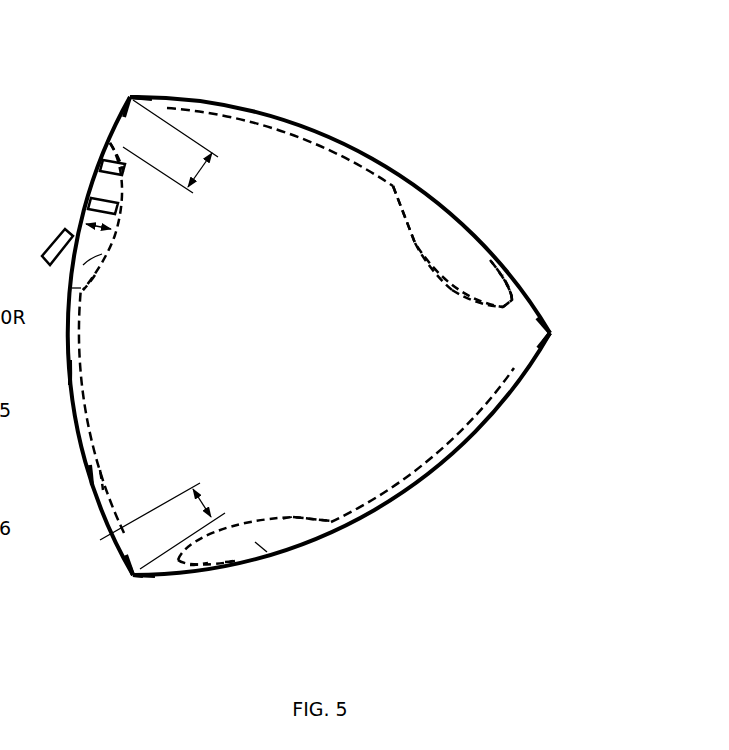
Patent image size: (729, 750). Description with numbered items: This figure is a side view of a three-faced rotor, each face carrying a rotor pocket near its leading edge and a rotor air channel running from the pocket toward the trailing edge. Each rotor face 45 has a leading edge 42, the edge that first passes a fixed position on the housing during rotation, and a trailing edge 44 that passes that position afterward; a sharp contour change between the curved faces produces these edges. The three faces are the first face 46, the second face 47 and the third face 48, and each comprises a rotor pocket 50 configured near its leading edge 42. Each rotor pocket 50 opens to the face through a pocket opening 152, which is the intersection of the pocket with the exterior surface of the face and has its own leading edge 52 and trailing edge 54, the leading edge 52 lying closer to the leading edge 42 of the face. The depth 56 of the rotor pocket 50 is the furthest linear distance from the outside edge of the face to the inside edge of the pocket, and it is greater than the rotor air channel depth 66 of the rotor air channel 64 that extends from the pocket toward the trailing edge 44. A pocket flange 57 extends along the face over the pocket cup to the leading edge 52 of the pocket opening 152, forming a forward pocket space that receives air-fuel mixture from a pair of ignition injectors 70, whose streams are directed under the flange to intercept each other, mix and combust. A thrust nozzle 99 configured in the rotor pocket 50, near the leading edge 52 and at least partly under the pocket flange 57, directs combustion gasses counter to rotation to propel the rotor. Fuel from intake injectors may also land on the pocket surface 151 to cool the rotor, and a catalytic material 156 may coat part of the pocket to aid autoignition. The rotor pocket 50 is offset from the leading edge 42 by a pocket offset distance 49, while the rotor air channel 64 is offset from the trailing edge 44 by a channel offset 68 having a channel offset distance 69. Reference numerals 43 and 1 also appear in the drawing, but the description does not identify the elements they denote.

The leading edge 42 is at (120, 58).
The first corner 43 is at (133, 60).
The trailing edge 44 is at (97, 622).
The rotor face 45 is at (66, 311).
The first face 46 is at (67, 372).
The second face 47 is at (270, 108).
The third face 48 is at (380, 512).
The pocket offset distance 49 is at (176, 147).
The rotor pocket 50 is at (134, 233).
The leading edge of rotor pocket opening 52 is at (72, 181).
The trailing edge of rotor pocket opening 54 is at (119, 311).
The depth of rotor pocket 56 is at (100, 258).
The pocket flange 57 is at (79, 137).
The rotor air channel 64 is at (72, 442).
The rotor air channel depth 66 is at (103, 470).
The channel offset 68 is at (133, 576).
The channel offset distance 69 is at (170, 526).
The ignition injector 70 is at (49, 240).
The thrust nozzle 99 is at (112, 188).
The pocket surface 151 is at (287, 522).
The pocket opening 152 is at (42, 261).
The catalytic material 156 is at (417, 243).
The garment 1 is at (86, 475).